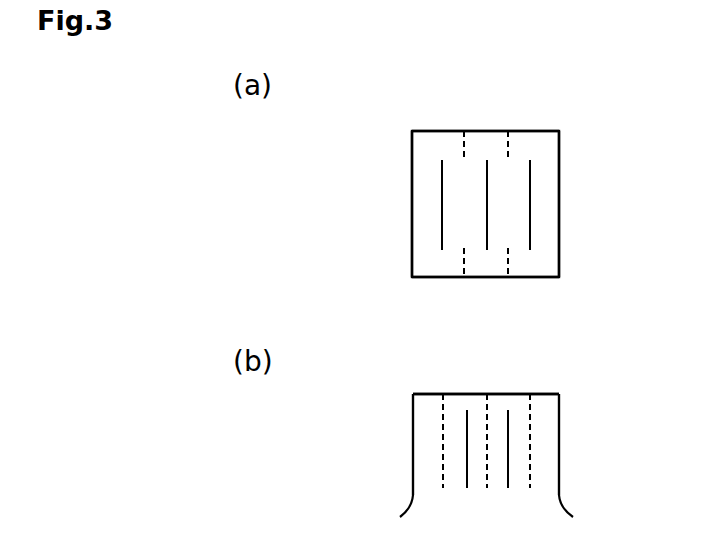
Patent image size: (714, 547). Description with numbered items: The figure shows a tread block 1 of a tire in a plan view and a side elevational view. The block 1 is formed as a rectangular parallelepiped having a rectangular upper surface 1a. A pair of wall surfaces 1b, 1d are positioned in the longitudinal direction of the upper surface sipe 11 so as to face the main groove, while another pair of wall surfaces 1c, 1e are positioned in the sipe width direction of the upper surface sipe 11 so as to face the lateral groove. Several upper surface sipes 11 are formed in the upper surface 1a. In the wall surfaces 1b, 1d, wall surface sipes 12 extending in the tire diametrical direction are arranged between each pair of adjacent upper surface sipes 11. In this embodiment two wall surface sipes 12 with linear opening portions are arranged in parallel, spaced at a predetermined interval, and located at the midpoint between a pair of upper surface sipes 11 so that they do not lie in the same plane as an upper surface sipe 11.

The block 1 is at (550, 131).
The upper surface 1a is at (540, 180).
The wall surface 1b is at (550, 277).
The wall surface 1c is at (412, 205).
The wall surface 1d is at (432, 131).
The wall surface 1e is at (559, 210).
The upper surface sipe 11 is at (442, 230).
The wall surface sipe 12 is at (508, 140).